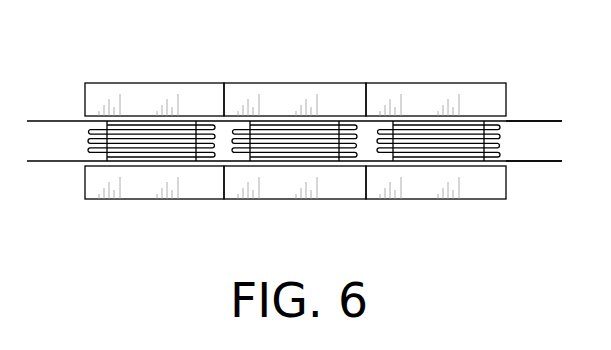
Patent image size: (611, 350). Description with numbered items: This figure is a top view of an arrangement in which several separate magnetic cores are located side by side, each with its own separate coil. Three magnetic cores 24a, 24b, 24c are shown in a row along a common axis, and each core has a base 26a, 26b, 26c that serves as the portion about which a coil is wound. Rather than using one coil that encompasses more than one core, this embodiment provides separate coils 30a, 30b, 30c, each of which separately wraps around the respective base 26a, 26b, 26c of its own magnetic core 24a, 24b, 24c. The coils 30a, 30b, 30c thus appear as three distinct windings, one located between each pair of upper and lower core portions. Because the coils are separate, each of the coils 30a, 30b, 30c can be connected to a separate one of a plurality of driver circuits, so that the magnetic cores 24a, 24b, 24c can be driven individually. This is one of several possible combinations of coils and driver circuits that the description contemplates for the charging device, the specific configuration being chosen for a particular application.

The magnetic core 24a is at (145, 82).
The magnetic core 24b is at (281, 83).
The magnetic core 24c is at (460, 83).
The base 26a is at (142, 150).
The base 26b is at (282, 155).
The base 26c is at (458, 157).
The coil 30a is at (53, 120).
The coil 30b is at (400, 222).
The coil 30c is at (528, 118).